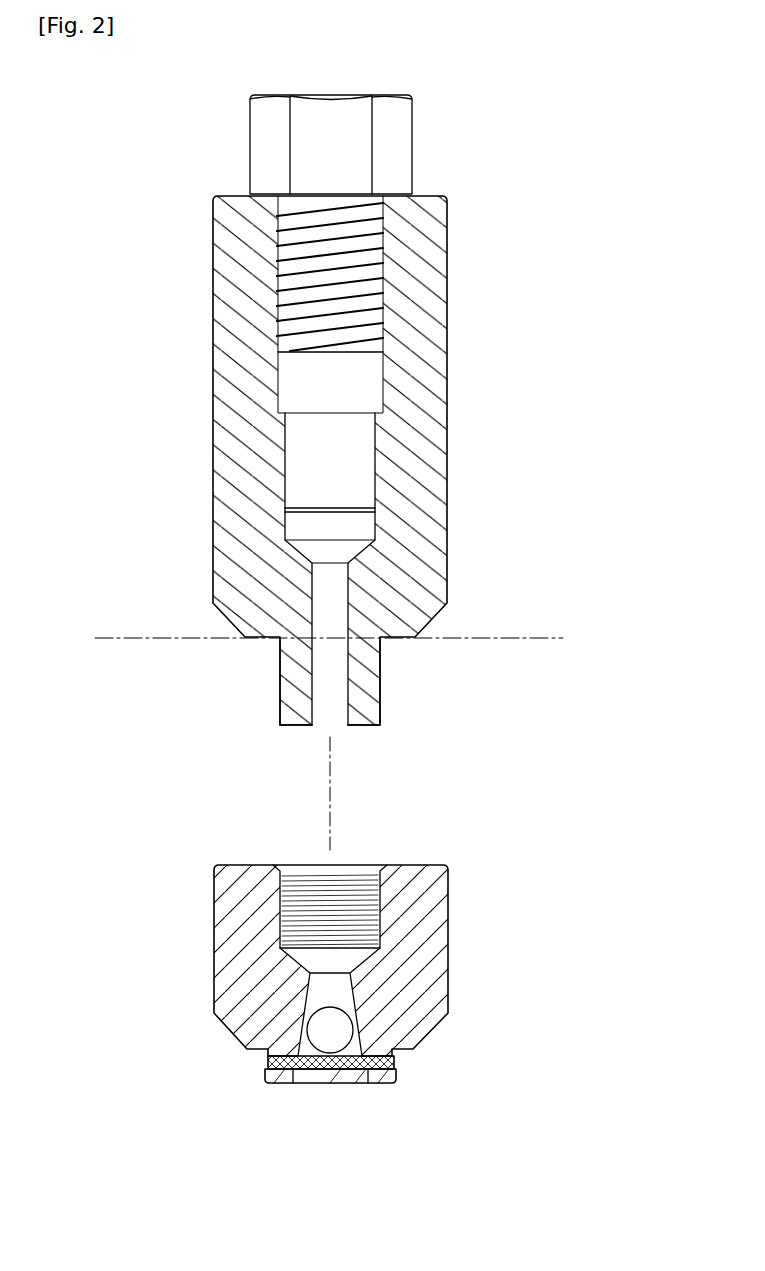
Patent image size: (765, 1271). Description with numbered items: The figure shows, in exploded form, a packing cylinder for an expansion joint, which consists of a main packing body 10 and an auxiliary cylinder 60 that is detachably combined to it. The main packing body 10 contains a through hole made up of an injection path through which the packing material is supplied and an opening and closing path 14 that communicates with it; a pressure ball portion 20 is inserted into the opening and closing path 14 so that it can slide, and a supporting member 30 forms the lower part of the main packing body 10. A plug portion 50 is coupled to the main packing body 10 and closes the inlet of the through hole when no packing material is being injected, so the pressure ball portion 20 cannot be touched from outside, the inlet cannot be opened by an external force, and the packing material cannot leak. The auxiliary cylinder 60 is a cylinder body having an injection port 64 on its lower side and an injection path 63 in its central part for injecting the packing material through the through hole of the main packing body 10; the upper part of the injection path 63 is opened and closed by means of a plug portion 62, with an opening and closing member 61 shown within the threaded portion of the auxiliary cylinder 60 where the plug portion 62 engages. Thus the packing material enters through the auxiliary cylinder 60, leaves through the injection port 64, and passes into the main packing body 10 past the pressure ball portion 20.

The main packing body 10 is at (280, 960).
The opening and closing path 14 is at (295, 933).
The pressure ball portion 20 is at (320, 1022).
The supporting member 30 is at (342, 1072).
The plug portion 50 is at (250, 143).
The auxiliary cylinder 60 is at (273, 460).
The opening and closing member 61 is at (228, 383).
The plug portion 62 is at (258, 144).
The injection path 63 is at (327, 592).
The injection port 64 is at (275, 678).